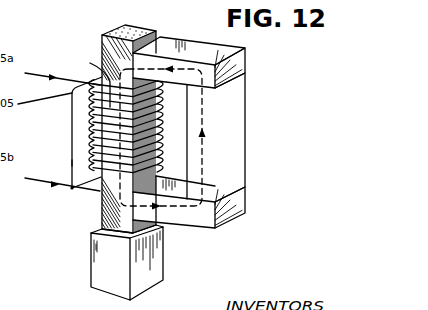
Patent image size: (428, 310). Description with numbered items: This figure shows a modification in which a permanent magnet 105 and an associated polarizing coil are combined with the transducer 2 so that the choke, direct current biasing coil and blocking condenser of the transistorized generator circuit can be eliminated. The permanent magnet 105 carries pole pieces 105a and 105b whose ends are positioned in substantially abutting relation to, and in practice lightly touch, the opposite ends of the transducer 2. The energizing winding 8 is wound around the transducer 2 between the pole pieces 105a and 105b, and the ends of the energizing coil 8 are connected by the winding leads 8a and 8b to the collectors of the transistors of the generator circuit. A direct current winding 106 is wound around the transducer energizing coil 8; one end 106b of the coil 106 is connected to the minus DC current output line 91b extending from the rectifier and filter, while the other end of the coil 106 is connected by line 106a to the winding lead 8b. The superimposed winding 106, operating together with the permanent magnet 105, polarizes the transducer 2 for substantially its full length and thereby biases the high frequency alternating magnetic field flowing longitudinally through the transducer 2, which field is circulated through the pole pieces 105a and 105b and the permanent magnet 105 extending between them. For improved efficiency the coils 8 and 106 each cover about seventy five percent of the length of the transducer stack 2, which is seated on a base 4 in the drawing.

The transducer 2 is at (138, 26).
The base block 4 is at (157, 267).
The energizing winding 8 is at (95, 80).
The winding lead 8a is at (68, 81).
The winding lead 8b is at (63, 190).
The permanent magnet 105 is at (215, 132).
The pole piece 105a is at (237, 62).
The pole piece 105b is at (239, 198).
The direct current winding 106 is at (92, 104).
The line 106a is at (72, 137).
The end of coil 106b is at (89, 192).
The minus DC current output line 91b is at (68, 162).